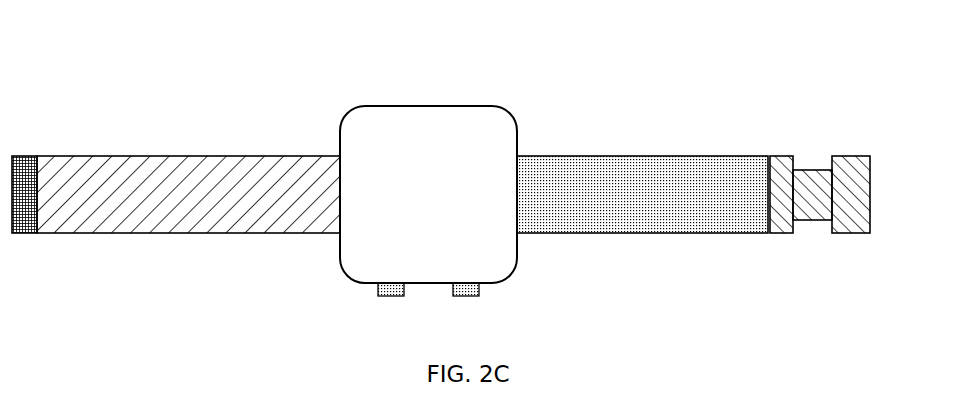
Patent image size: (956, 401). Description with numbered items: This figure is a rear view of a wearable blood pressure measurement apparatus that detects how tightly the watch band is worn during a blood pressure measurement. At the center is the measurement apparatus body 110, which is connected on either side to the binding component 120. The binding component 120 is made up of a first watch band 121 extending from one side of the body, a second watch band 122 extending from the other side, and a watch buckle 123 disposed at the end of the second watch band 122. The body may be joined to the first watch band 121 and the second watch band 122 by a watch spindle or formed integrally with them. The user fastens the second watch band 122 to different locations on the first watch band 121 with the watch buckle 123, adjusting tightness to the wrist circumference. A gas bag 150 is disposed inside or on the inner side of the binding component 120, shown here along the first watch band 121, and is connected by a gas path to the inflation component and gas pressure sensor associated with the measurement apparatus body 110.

The measurement apparatus body 110 is at (490, 283).
The binding component 120 is at (897, 101).
The first watch band 121 is at (25, 155).
The second watch band 122 is at (630, 156).
The watch buckle 123 is at (845, 156).
The gas bag 150 is at (202, 233).